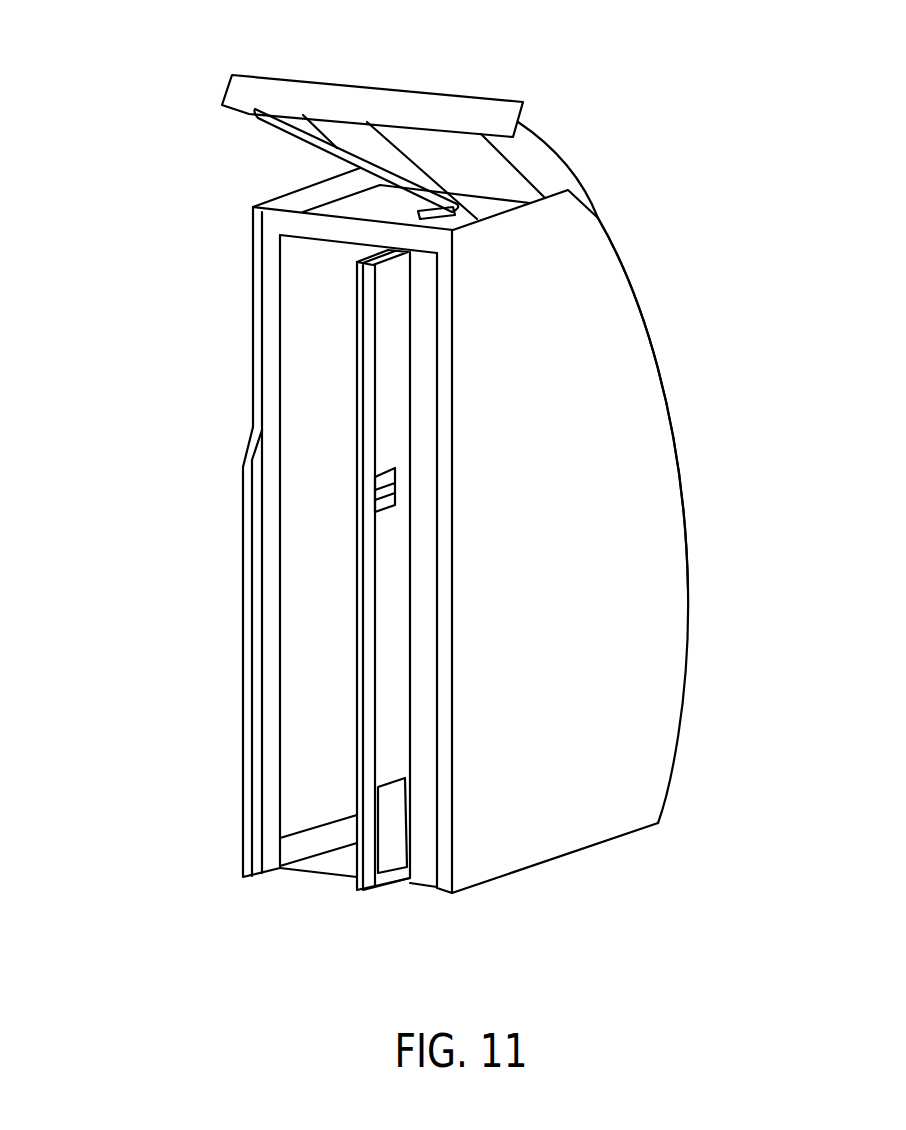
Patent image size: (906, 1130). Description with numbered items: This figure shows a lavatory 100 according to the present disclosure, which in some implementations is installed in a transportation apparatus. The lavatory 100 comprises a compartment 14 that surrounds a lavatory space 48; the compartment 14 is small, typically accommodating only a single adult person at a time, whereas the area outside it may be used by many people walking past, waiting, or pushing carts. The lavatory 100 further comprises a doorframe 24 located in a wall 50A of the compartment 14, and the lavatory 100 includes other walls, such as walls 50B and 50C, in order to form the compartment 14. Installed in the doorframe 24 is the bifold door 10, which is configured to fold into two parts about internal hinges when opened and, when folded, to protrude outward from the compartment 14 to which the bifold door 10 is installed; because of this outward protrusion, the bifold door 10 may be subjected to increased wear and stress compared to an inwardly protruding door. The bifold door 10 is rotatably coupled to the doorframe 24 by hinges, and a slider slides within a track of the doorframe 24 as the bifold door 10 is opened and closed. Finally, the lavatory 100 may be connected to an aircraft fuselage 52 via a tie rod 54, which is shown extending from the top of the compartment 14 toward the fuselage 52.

The lavatory 100 is at (108, 90).
The aircraft fuselage 52 is at (523, 102).
The tie rod 54 is at (294, 139).
The doorframe 24 is at (275, 225).
The wall 50C is at (307, 300).
The lavatory space 48 is at (318, 485).
The bifold door 10 is at (375, 889).
The wall 50A is at (445, 878).
The compartment 14 is at (677, 433).
The wall 50B is at (622, 678).